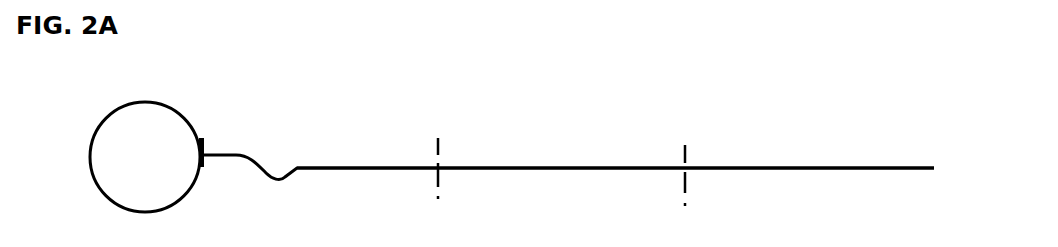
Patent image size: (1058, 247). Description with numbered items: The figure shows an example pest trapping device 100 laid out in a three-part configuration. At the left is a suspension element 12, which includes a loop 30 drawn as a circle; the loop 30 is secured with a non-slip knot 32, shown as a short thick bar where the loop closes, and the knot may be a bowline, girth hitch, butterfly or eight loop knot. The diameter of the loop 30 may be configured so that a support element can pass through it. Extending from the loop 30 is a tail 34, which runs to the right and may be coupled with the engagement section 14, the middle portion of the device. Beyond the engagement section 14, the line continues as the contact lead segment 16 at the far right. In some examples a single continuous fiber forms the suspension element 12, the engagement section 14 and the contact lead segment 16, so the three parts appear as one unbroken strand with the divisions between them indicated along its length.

The pest trapping device 100 is at (336, 86).
The loop 30 is at (93, 136).
The non-slip knot 32 is at (202, 168).
The suspension element 12 is at (330, 156).
The tail 34 is at (388, 170).
The engagement section 14 is at (537, 156).
The contact lead segment 16 is at (873, 156).